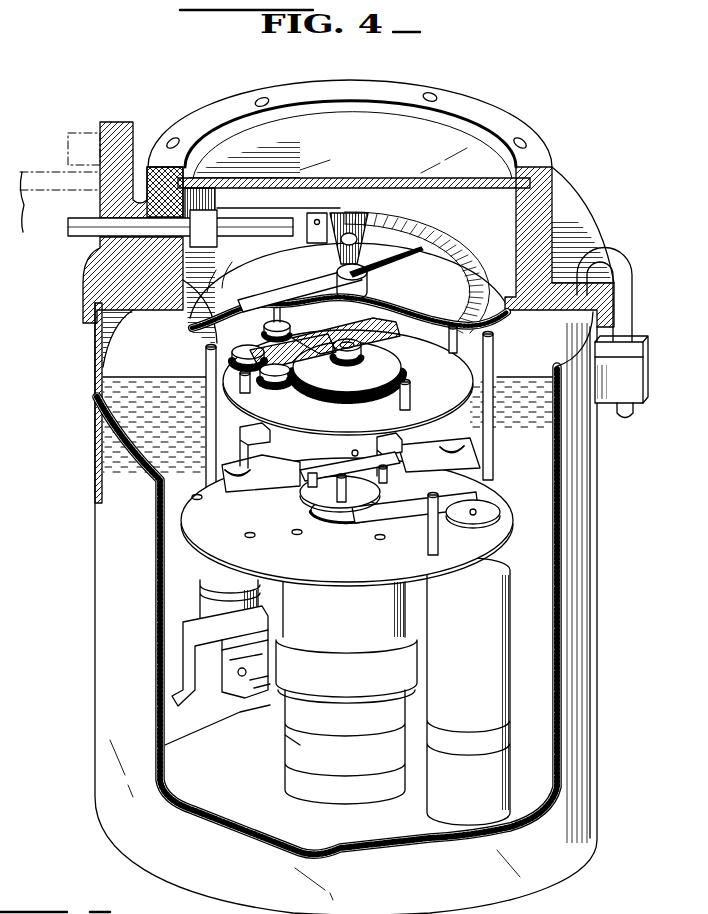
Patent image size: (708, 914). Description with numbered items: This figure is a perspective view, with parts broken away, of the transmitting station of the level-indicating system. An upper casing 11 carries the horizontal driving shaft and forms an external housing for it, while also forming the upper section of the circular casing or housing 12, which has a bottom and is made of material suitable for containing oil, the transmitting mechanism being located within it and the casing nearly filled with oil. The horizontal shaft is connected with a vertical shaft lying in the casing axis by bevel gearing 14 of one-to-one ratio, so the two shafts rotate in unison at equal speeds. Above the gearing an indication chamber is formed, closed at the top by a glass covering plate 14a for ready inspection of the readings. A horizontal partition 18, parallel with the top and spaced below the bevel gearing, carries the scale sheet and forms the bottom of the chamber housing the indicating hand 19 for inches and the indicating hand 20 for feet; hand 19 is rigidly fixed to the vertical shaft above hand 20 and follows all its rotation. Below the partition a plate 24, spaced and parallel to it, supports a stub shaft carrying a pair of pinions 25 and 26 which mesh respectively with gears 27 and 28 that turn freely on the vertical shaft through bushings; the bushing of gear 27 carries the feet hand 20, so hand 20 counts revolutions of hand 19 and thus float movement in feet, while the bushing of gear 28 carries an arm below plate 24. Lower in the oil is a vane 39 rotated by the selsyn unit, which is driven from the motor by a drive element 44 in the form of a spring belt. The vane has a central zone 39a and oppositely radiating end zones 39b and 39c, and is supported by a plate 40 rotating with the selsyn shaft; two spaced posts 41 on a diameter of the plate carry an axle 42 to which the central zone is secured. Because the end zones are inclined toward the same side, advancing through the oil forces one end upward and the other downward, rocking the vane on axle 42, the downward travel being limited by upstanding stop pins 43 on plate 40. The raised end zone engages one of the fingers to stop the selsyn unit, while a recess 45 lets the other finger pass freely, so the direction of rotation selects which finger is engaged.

The casing 11 is at (83, 297).
The casing or housing 12 is at (99, 586).
The bevel gearing 14 is at (353, 228).
The glass covering plate 14a is at (350, 129).
The horizontal partition 18 is at (470, 244).
The indicating hand 19 is at (300, 284).
The indicating hand 20 is at (372, 270).
The plate 24 is at (348, 382).
The pinion 25 is at (270, 334).
The pinion 26 is at (280, 382).
The gear 27 is at (402, 340).
The gear 28 is at (398, 362).
The vane 39 is at (447, 474).
The central zone 39a is at (330, 462).
The end zone 39b is at (248, 488).
The end zone 39c is at (482, 462).
The plate 40 is at (322, 494).
The posts 41 is at (332, 508).
The axle 42 is at (347, 481).
The stop pins 43 is at (388, 474).
The drive element 44 is at (406, 532).
The recess 45 is at (222, 470).